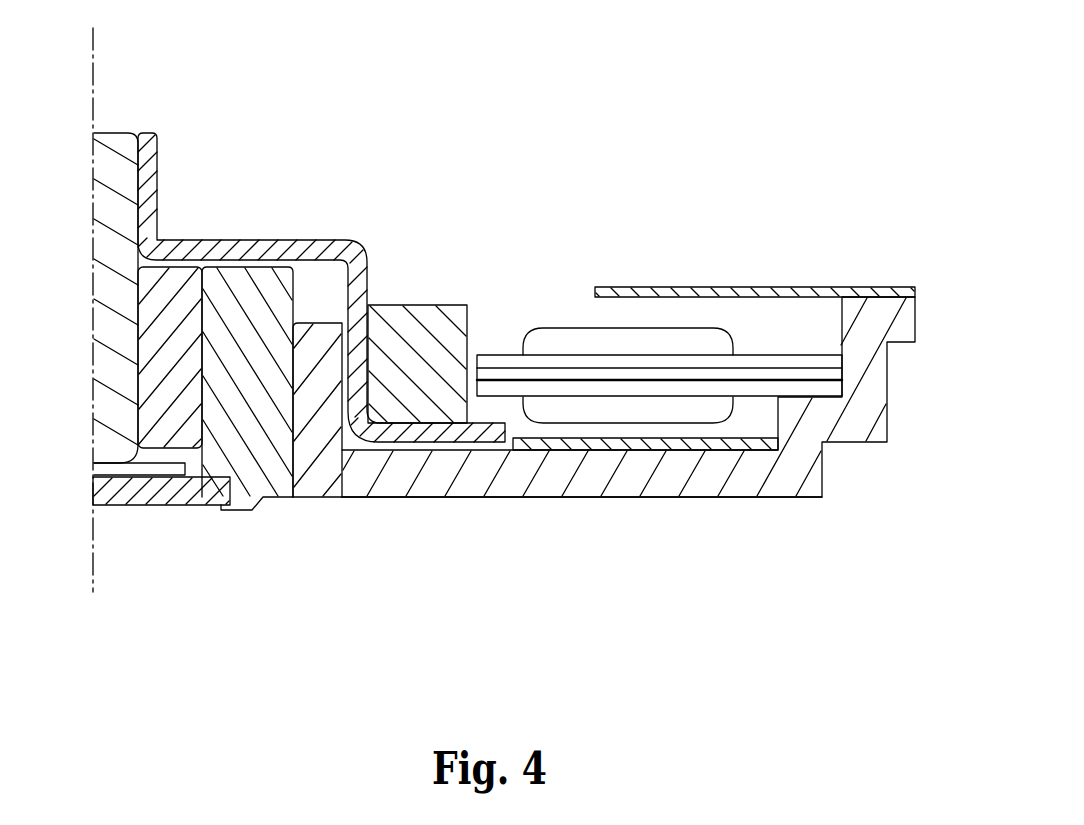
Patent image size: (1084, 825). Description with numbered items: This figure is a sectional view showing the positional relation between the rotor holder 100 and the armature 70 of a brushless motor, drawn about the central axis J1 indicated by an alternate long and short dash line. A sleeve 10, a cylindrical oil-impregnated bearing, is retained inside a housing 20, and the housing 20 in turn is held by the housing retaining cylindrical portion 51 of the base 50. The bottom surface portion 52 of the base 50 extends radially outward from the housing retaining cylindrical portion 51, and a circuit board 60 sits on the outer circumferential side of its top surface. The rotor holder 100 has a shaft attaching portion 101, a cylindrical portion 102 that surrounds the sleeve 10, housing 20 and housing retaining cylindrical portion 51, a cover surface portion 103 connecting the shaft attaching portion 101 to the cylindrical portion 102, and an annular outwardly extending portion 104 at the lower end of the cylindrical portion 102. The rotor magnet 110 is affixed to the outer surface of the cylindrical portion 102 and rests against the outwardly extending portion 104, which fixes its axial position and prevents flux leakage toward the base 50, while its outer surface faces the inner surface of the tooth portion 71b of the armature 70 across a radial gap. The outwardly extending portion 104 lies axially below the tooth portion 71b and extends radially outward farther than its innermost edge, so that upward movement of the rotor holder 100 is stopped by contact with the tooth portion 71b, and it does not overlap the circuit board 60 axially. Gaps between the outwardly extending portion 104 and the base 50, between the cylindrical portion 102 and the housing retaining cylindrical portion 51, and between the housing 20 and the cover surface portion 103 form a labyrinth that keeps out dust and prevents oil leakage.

The central axis J1 is at (93, 98).
The sleeve 10 is at (170, 413).
The housing 20 is at (253, 447).
The base 50 is at (360, 509).
The housing retaining cylindrical portion 51 is at (318, 410).
The bottom surface portion 52 is at (472, 487).
The circuit board 60 is at (692, 442).
The armature 70 is at (583, 322).
The tooth portion 71b is at (615, 377).
The rotor holder 100 is at (225, 232).
The shaft attaching portion 101 is at (152, 175).
The cylindrical portion 102 is at (363, 283).
The cover surface portion 103 is at (270, 250).
The outwardly extending portion 104 is at (423, 435).
The rotor magnet 110 is at (435, 298).